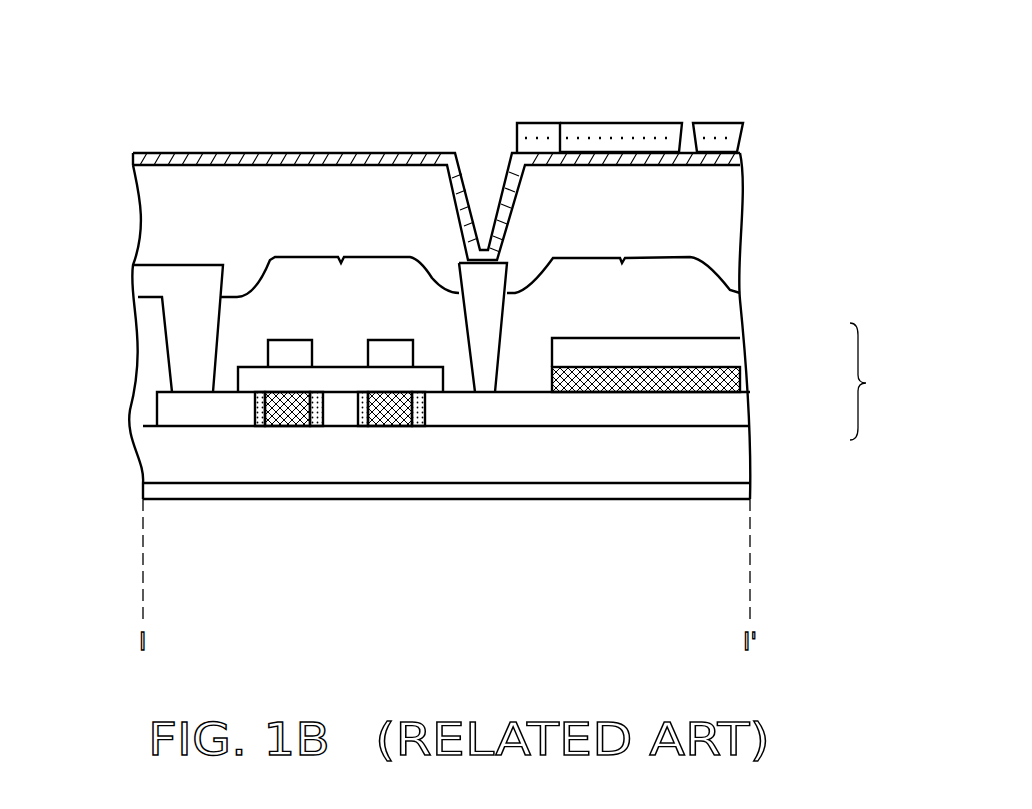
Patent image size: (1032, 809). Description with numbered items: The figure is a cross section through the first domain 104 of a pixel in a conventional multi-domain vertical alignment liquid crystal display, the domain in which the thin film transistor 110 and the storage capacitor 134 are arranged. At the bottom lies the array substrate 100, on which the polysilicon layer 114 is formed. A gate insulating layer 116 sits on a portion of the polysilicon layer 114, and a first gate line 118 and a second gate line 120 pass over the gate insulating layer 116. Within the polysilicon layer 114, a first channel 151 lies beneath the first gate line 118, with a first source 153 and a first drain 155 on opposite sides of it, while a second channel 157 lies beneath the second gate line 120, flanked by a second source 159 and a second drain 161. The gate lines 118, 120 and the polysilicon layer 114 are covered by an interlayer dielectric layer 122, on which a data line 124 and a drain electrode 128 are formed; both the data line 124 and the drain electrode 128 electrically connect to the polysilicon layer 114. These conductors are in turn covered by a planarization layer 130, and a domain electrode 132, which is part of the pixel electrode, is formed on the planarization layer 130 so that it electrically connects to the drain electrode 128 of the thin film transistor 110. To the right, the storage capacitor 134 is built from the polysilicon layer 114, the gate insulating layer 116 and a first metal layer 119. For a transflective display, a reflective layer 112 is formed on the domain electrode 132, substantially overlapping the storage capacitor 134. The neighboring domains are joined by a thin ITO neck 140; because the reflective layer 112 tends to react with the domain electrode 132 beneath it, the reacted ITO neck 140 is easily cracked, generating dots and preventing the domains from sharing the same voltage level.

The array substrate 100 is at (735, 460).
The first domain 104 is at (448, 499).
The thin film transistor 110 is at (203, 517).
The reflective layer 112 is at (627, 128).
The polysilicon layer 114 is at (690, 412).
The gate insulating layer 116 is at (252, 383).
The first gate line 118 is at (275, 350).
The first metal layer 119 is at (688, 356).
The second gate line 120 is at (404, 350).
The interlayer dielectric layer 122 is at (737, 312).
The data line 124 is at (165, 282).
The drain electrode 128 is at (480, 273).
The planarization layer 130 is at (735, 218).
The domain electrode 132 is at (558, 140).
The storage capacitor 134 is at (885, 381).
The ITO neck 140 is at (718, 128).
The first channel 151 is at (287, 428).
The first source 153 is at (263, 428).
The first drain 155 is at (320, 428).
The second channel 157 is at (365, 428).
The second source 159 is at (380, 428).
The second drain 161 is at (422, 428).